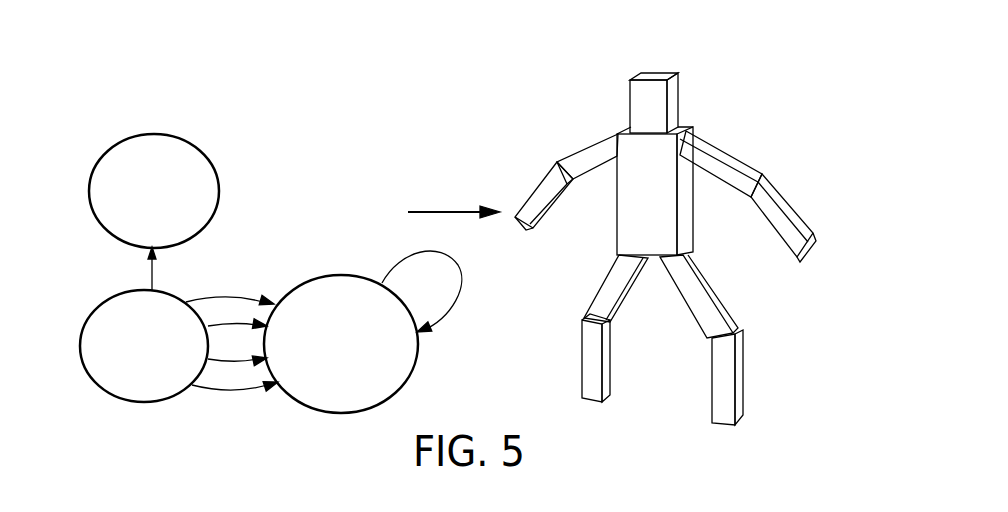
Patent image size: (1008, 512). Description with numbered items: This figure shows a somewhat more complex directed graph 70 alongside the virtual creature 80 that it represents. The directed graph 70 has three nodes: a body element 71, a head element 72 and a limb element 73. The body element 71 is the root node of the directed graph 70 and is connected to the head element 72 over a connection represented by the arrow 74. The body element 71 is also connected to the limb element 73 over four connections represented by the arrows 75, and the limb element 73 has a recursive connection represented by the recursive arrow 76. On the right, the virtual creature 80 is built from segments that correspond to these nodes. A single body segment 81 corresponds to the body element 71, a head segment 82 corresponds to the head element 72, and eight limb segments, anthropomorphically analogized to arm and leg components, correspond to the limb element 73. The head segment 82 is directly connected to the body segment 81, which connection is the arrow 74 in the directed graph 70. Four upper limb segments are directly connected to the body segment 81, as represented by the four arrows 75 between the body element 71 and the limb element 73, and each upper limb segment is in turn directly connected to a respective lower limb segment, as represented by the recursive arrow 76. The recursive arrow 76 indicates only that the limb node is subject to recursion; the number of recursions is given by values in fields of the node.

The directed graph 70 is at (88, 396).
The body element 71 is at (138, 403).
The head element 72 is at (217, 172).
The limb element 73 is at (320, 273).
The arrow 74 is at (153, 273).
The arrows 75 is at (231, 401).
The recursive arrow 76 is at (403, 262).
The virtual creature 80 is at (815, 151).
The body segment 81 is at (661, 208).
The head segment 82 is at (660, 72).